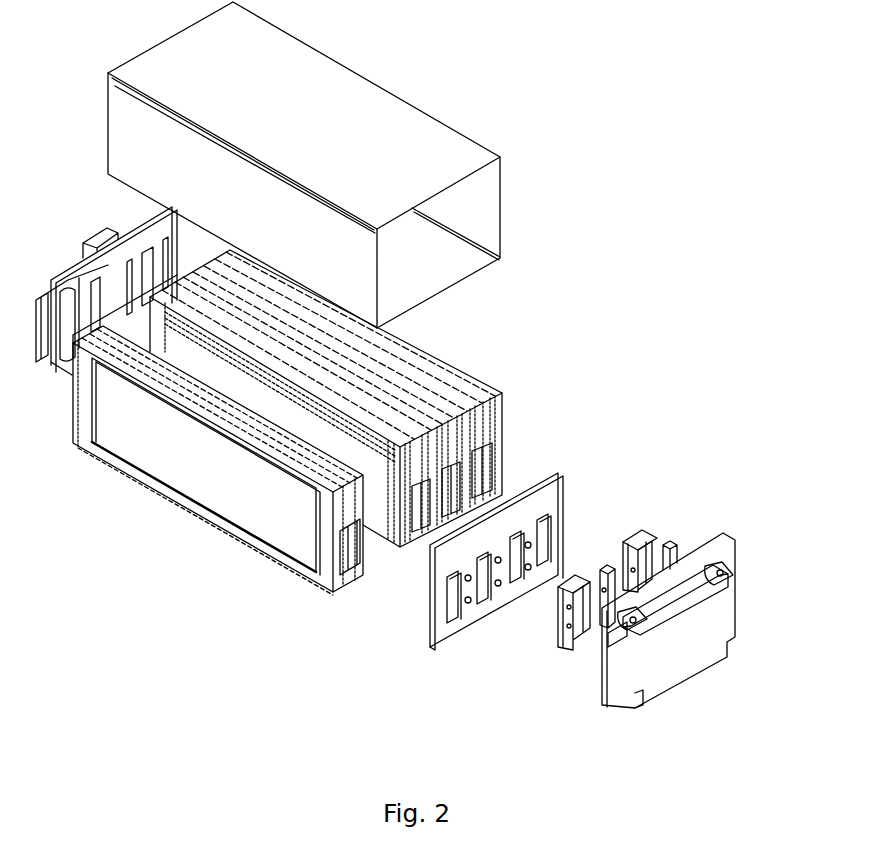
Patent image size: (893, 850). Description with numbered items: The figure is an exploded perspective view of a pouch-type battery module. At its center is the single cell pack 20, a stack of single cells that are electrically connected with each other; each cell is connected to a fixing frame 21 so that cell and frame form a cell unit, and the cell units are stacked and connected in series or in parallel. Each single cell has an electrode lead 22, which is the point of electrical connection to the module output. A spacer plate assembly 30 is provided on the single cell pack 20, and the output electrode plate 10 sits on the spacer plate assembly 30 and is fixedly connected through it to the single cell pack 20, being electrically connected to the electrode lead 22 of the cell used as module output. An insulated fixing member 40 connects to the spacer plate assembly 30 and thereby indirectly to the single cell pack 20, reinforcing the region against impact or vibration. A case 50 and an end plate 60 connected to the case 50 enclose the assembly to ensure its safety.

The output electrode plate 10 is at (625, 555).
The single cell pack 20 is at (504, 407).
The fixing frame 21 is at (336, 593).
The electrode lead 22 is at (356, 576).
The spacer plate assembly 30 is at (552, 505).
The insulated fixing member 40 is at (466, 577).
The case 50 is at (335, 82).
The end plate 60 is at (733, 600).